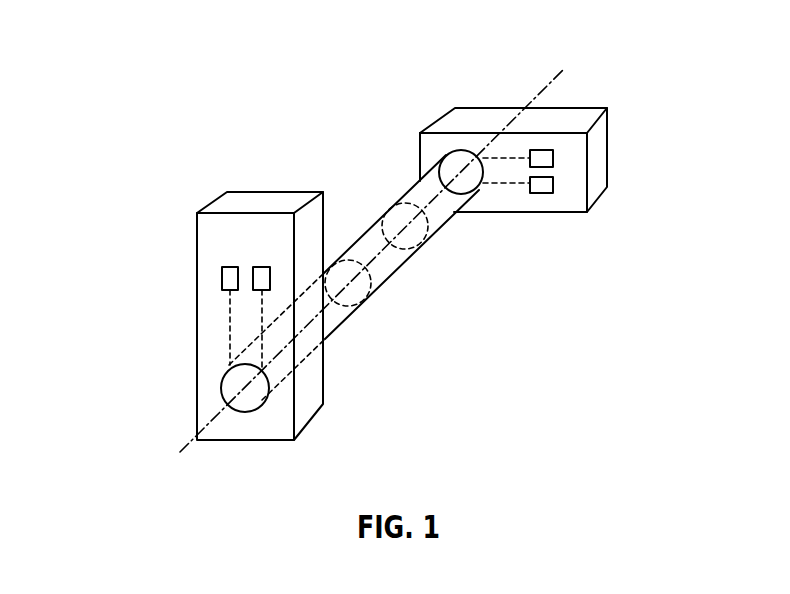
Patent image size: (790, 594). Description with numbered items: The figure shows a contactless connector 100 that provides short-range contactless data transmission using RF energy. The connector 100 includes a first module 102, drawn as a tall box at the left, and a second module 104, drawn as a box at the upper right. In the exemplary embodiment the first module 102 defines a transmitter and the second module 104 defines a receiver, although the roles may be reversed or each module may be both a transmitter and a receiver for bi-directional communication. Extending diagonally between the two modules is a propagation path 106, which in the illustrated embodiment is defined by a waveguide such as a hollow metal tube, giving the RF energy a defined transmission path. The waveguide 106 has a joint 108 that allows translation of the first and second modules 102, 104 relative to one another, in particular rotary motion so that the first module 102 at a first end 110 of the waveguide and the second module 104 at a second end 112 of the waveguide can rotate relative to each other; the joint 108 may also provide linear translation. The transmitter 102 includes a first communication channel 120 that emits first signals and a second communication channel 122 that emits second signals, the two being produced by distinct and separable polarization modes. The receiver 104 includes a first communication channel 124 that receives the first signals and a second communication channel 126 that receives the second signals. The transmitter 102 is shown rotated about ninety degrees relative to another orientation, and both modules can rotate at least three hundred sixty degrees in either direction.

The contactless connector 100 is at (276, 78).
The first module 102 is at (178, 277).
The second module 104 is at (585, 88).
The propagation path 106 is at (440, 226).
The joint 108 is at (398, 277).
The first end 110 is at (268, 394).
The second end 112 is at (477, 157).
The first communication channel 120 is at (216, 336).
The second communication channel 122 is at (248, 308).
The first communication channel 124 is at (522, 200).
The second communication channel 126 is at (505, 176).